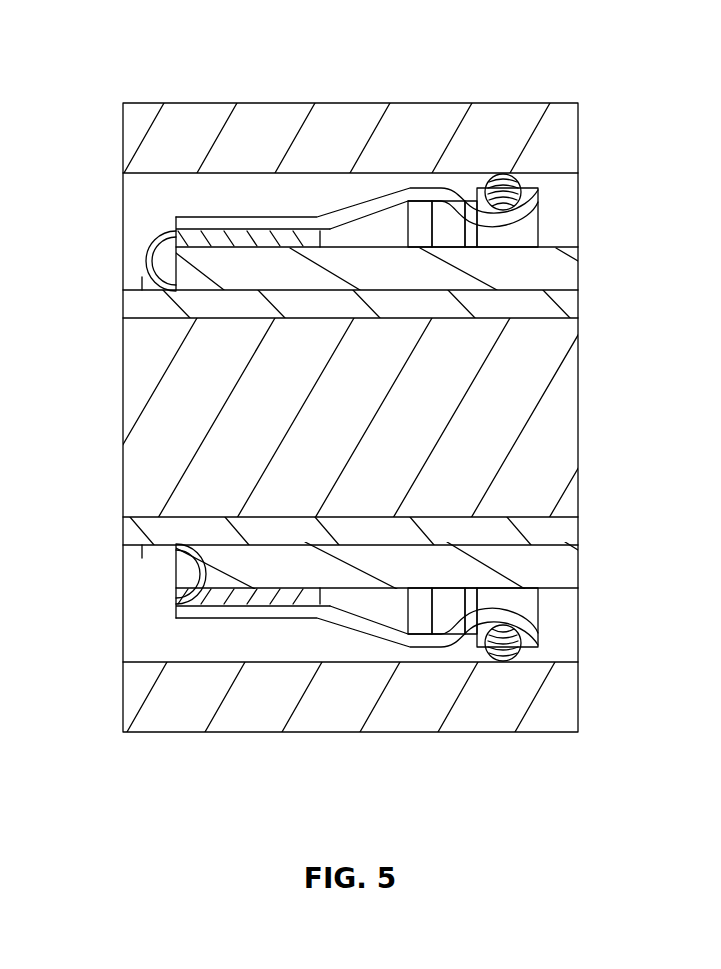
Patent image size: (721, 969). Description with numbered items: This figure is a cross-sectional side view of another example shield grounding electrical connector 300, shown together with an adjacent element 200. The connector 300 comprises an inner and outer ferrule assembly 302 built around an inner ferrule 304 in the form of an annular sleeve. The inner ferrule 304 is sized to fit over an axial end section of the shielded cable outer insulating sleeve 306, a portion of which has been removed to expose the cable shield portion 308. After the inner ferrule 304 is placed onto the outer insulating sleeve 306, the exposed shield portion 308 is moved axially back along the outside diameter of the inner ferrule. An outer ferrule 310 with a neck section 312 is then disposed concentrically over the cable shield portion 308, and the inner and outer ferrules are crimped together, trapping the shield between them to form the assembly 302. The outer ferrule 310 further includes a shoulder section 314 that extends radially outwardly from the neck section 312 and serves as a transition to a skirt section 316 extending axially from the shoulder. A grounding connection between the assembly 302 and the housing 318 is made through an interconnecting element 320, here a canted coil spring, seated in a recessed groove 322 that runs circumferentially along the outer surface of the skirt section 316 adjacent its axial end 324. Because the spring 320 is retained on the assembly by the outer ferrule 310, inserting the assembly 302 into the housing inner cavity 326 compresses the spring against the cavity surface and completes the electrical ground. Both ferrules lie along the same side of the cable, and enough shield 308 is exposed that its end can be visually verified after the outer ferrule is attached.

The mating component 200 is at (289, 402).
The shield grounding electrical connector 300 is at (610, 176).
The inner and outer ferrule assembly 302 is at (300, 648).
The inner ferrule 304 is at (242, 596).
The shielded cable outer insulating sleeve 306 is at (551, 568).
The cable shield portion 308 is at (147, 596).
The outer ferrule 310 is at (348, 193).
The neck section 312 is at (193, 608).
The shoulder section 314 is at (385, 207).
The skirt section 316 is at (458, 200).
The housing 318 is at (271, 133).
The interconnecting element 320 is at (513, 653).
The recessed groove 322 is at (507, 207).
The axial end 324 is at (540, 206).
The housing inner cavity 326 is at (208, 179).